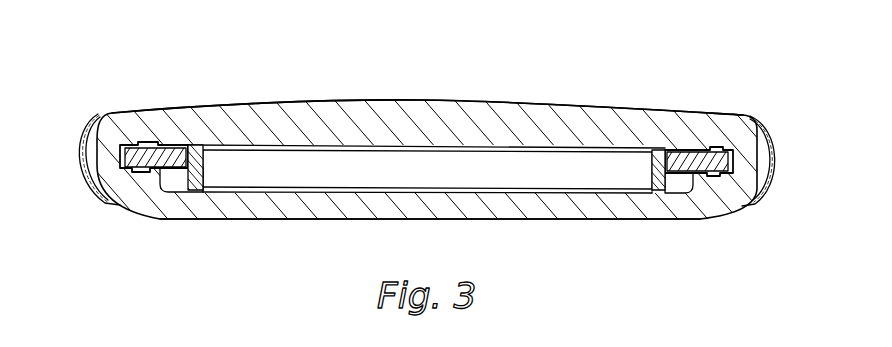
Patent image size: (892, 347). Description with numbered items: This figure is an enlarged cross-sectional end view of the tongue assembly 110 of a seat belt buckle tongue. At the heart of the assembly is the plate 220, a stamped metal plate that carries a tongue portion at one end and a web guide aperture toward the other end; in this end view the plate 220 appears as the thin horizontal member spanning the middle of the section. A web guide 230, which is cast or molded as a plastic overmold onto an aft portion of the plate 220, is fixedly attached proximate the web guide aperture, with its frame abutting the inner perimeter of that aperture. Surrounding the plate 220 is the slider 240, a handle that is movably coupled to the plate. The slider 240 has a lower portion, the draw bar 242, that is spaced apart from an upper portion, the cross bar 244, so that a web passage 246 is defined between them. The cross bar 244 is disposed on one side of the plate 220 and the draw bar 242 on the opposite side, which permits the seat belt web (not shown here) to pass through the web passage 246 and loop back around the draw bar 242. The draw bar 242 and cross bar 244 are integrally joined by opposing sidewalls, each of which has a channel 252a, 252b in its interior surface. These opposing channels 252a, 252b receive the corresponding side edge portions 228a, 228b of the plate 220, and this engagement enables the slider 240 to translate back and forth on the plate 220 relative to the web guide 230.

The tongue assembly 110 is at (521, 54).
The plate 220 is at (158, 149).
The side edge portion 228a is at (122, 160).
The side edge portion 228b is at (740, 170).
The web guide 230 is at (643, 171).
The slider 240 is at (728, 116).
The draw bar 242 is at (370, 220).
The cross bar 244 is at (587, 107).
The web passage 246 is at (428, 173).
The channel 252a is at (141, 144).
The channel 252b is at (706, 148).